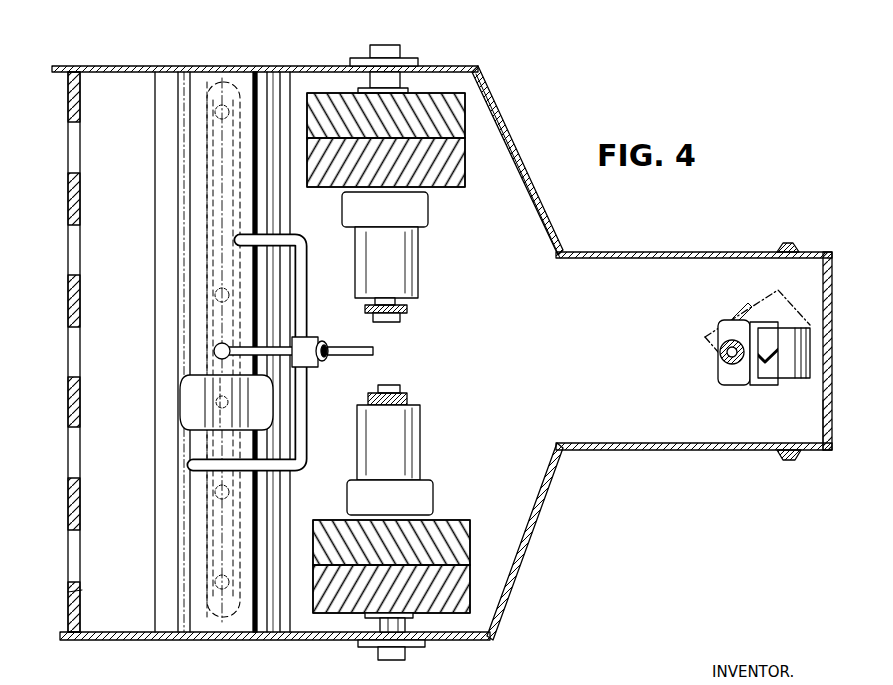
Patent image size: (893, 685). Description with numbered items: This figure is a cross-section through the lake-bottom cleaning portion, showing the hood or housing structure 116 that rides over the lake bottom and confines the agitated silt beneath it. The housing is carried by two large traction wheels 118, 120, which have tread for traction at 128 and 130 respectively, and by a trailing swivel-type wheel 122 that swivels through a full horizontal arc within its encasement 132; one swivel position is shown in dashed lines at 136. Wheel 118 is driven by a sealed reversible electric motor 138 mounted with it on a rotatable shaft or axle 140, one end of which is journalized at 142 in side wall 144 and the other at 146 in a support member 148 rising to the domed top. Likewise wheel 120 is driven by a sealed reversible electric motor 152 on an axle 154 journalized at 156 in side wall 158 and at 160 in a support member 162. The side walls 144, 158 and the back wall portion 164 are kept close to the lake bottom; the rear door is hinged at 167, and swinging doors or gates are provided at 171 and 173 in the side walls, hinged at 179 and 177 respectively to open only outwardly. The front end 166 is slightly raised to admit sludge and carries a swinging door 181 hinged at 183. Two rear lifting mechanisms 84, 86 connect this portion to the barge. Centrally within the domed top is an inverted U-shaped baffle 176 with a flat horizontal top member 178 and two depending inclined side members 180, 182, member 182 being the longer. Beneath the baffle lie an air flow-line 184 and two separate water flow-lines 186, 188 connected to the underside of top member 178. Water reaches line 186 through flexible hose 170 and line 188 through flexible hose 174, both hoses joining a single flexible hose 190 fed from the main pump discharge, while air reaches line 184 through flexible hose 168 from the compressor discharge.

The lifting mechanism 84 is at (788, 460).
The lifting mechanism 86 is at (788, 243).
The hood or housing structure 116 is at (652, 253).
The traction wheel 118 is at (470, 523).
The traction wheel 120 is at (462, 190).
The trailing swivel-type wheel 122 is at (800, 378).
The tread 128 is at (425, 540).
The tread 130 is at (445, 160).
The encasement 132 is at (722, 362).
The swivel position 136 is at (770, 292).
The sealed reversible electric motor 138 is at (422, 438).
The rotatable shaft or axle 140 is at (405, 622).
The journal 142 is at (415, 646).
The side wall 144 is at (337, 641).
The journal 146 is at (400, 388).
The support member 148 is at (407, 398).
The sealed reversible electric motor 152 is at (418, 256).
The rotatable shaft or axle 154 is at (400, 82).
The journal 156 is at (400, 56).
The side wall 158 is at (318, 67).
The journal 160 is at (400, 318).
The support member 162 is at (407, 309).
The back wall portion 164 is at (826, 278).
The front end opening 166 is at (82, 590).
The hinge / air chamber 167 is at (830, 425).
The flexible hose 168 is at (355, 355).
The flexible hose 170 is at (306, 442).
The swinging door or gate 171 is at (560, 458).
The swinging door or gate wall portion 173 is at (536, 210).
The flexible hose 174 is at (305, 275).
The inverted U-shaped baffle 176 is at (188, 263).
The hinge 177 is at (516, 140).
The top member 178 is at (195, 230).
The hinge 179 is at (545, 508).
The side member 180 is at (160, 311).
The swinging front door 181 is at (70, 250).
The side member 182 is at (287, 220).
The hinge 183 is at (70, 200).
The air flow-line or pipe 184 is at (225, 420).
The water flow-line or pipe 186 is at (195, 405).
The water flow-line or pipe 188 is at (260, 412).
The flexible hose 190 is at (316, 345).